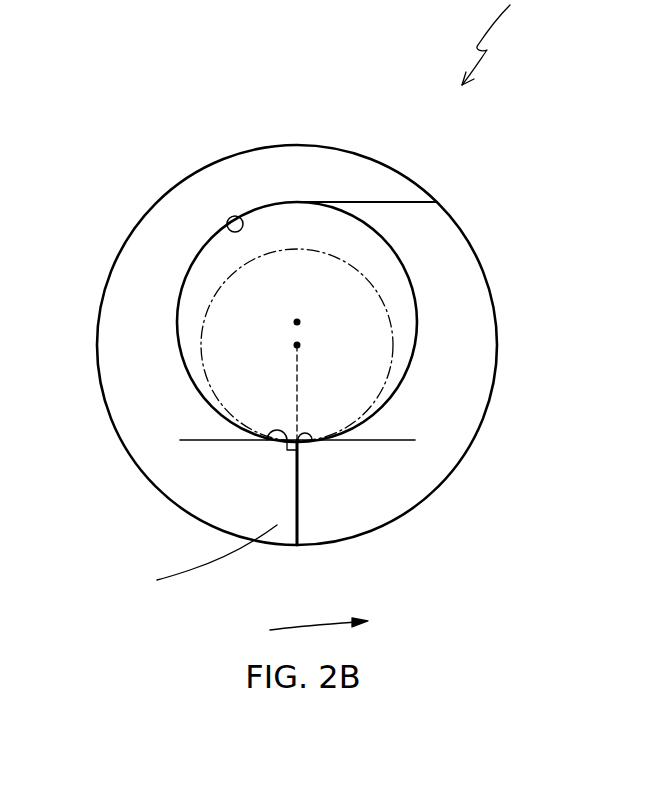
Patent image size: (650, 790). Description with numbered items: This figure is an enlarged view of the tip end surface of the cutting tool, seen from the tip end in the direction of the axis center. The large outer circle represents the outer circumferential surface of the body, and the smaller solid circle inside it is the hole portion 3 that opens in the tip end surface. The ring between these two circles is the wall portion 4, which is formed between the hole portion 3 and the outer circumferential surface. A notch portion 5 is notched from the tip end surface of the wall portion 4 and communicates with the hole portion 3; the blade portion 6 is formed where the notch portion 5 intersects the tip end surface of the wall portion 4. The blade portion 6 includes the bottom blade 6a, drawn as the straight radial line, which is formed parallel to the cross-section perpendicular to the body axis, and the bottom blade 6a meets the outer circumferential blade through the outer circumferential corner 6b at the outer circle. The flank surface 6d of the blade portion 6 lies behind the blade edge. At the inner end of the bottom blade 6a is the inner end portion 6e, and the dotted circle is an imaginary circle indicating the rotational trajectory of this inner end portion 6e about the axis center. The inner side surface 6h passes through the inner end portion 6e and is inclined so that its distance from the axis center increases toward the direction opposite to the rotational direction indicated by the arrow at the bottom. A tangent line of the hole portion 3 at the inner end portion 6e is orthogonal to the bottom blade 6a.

The hole portion 3 is at (229, 218).
The wall portion 4 is at (308, 155).
The notch portion 5 is at (473, 269).
The blade portion 6 is at (310, 555).
The bottom blade 6a is at (299, 500).
The outer circumferential corner 6b is at (297, 545).
The flank surface 6d is at (201, 563).
The inner end portion 6e is at (310, 442).
The inner side surface 6h is at (267, 440).